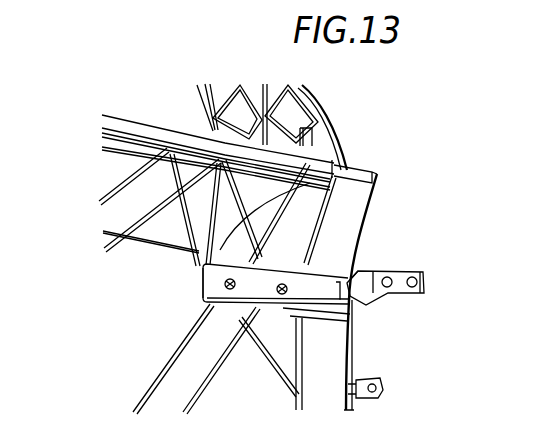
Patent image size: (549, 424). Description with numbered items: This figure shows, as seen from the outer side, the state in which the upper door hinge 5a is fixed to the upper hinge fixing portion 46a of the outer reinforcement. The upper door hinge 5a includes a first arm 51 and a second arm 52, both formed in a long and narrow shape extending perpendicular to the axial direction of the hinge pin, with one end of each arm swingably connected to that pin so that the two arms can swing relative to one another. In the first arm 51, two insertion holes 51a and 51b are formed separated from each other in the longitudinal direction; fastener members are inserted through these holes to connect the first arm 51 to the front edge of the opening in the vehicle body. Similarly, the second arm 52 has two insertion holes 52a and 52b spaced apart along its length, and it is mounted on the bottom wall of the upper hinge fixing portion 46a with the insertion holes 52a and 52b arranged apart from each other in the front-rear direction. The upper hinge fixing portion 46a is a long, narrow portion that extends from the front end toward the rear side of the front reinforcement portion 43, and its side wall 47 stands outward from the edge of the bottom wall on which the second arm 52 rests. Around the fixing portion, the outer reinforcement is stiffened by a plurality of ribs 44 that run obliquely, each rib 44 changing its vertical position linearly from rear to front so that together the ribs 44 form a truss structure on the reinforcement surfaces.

The front reinforcement portion 43 is at (302, 221).
The rib 44 is at (148, 162).
The upper hinge fixing portion 46a is at (198, 302).
The side wall 47 is at (200, 288).
The first arm 51 is at (423, 289).
The insertion hole 51a is at (421, 272).
The insertion hole 51b is at (387, 288).
The second arm 52 is at (255, 306).
The insertion hole 52a is at (298, 320).
The insertion hole 52b is at (349, 171).
The upper door hinge 5a is at (423, 273).